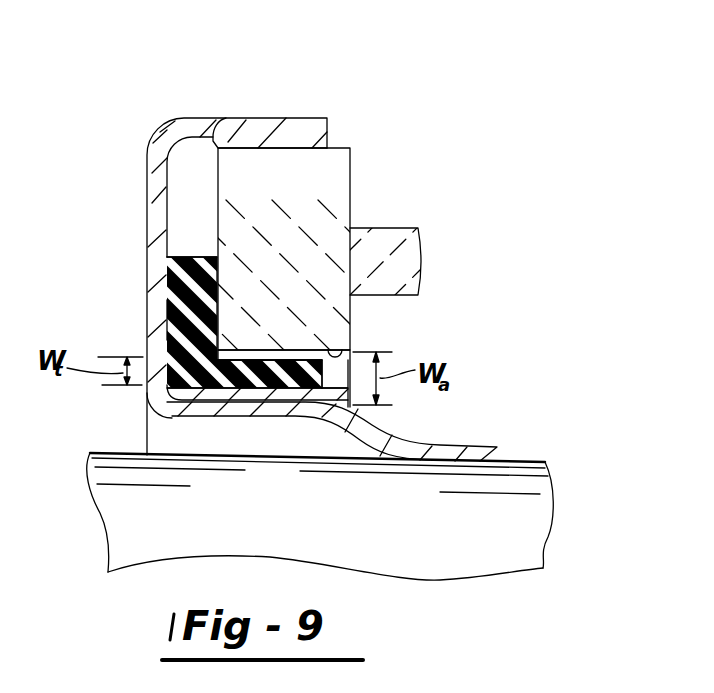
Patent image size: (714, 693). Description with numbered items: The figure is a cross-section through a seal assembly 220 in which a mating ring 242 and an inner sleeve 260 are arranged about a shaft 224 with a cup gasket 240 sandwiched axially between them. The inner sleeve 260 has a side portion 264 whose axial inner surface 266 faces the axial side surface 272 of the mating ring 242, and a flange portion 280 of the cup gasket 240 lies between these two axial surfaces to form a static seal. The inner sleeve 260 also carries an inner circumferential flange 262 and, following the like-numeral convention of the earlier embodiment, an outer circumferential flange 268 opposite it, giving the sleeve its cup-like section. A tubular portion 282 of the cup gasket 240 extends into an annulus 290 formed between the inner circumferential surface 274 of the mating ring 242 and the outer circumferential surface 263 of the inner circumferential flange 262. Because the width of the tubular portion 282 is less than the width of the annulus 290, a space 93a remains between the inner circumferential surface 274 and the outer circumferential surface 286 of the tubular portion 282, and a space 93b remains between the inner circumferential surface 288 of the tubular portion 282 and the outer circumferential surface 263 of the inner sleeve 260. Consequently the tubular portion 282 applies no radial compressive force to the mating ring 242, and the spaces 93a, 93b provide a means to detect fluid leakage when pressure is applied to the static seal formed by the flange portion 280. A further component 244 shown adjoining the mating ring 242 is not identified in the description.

The seal assembly 220 is at (573, 470).
The shaft 224 is at (523, 537).
The cup gasket 240 is at (200, 255).
The mating ring 242 is at (332, 182).
The side projection 244 is at (418, 243).
The inner sleeve 260 is at (493, 448).
The inner circumferential flange 262 is at (180, 420).
The outer circumferential surface 263 is at (272, 400).
The side portion 264 is at (153, 168).
The axial inner surface 266 is at (173, 127).
The outer circumferential flange 268 is at (202, 125).
The axial side surface 272 is at (218, 132).
The inner circumferential surface 274 is at (350, 350).
The flange portion 280 is at (173, 275).
The tubular portion 282 is at (177, 372).
The outer circumferential surface 286 is at (183, 323).
The inner circumferential surface 288 is at (172, 416).
The annulus 290 is at (332, 390).
The space 93a is at (283, 351).
The space 93b is at (226, 393).